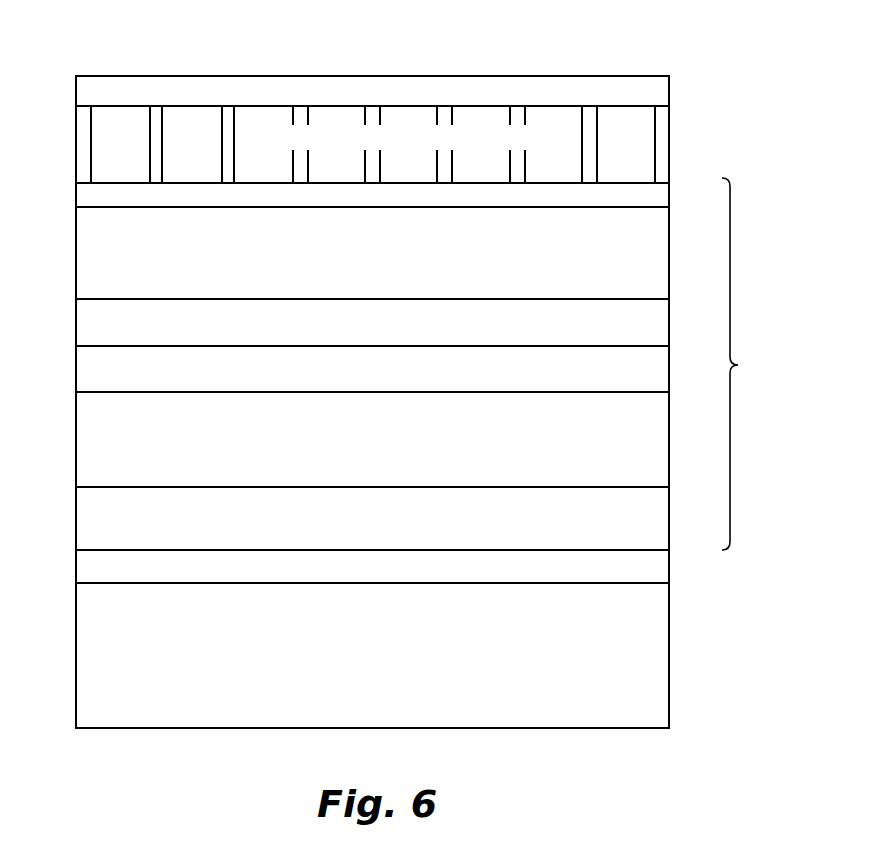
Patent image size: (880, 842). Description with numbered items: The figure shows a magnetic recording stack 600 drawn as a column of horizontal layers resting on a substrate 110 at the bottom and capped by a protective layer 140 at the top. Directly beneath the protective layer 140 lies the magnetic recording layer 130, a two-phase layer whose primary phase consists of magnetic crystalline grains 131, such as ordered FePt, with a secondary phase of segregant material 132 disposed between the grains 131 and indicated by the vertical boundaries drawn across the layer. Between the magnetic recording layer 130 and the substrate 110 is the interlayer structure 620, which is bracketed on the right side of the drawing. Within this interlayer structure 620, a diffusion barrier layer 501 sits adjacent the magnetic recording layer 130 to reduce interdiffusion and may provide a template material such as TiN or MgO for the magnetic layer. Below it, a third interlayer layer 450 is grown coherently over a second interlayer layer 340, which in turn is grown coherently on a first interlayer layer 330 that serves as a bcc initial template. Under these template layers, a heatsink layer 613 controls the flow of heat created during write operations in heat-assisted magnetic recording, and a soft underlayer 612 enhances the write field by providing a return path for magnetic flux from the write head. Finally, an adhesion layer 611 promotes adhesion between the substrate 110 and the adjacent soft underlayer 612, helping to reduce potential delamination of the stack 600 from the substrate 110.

The stack 600 is at (327, 54).
The protective layer 140 is at (664, 88).
The magnetic recording layer 130 is at (669, 138).
The magnetic crystalline grains 131 is at (107, 133).
The segregant material 132 is at (84, 135).
The diffusion barrier layer 501 is at (662, 199).
The third interlayer layer 450 is at (662, 254).
The second interlayer layer 340 is at (662, 321).
The first interlayer layer 330 is at (662, 366).
The heatsink layer 613 is at (669, 440).
The soft underlayer (SUL) 612 is at (669, 524).
The adhesion layer 611 is at (669, 576).
The substrate 110 is at (667, 673).
The interlayer structure 620 is at (786, 364).